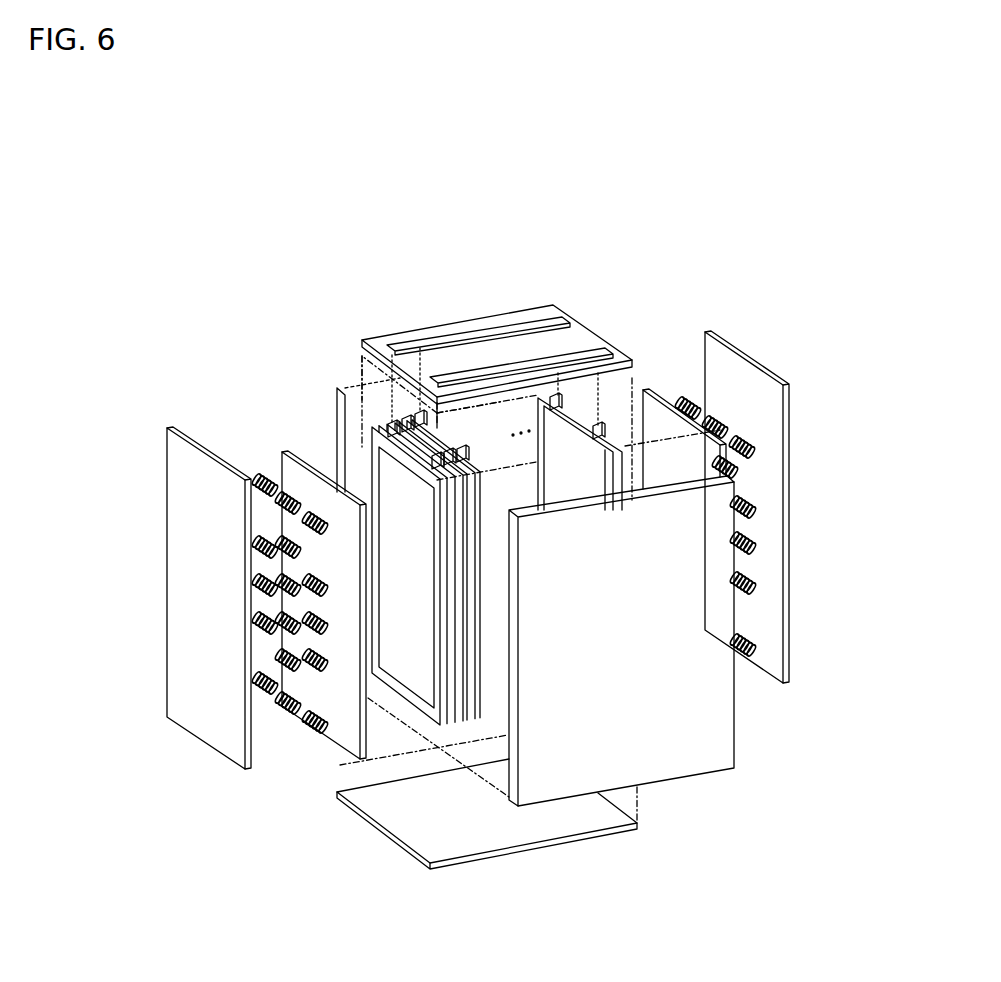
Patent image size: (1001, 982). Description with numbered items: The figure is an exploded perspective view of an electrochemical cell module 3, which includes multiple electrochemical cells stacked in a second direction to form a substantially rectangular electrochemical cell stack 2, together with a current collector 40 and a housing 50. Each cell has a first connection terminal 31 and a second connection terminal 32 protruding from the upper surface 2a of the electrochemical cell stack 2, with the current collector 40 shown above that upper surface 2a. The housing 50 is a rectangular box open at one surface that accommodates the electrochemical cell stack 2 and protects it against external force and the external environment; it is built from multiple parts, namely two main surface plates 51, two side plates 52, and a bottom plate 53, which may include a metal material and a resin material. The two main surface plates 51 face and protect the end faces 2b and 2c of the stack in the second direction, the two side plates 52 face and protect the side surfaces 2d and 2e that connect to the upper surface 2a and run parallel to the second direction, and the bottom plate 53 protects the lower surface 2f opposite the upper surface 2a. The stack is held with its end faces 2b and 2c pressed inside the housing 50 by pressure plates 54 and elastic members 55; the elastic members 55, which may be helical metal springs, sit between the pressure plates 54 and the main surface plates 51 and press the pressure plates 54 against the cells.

The electrochemical cell module 3 is at (563, 244).
The electrochemical cell stack 2 is at (356, 470).
The upper surface 2a is at (486, 416).
The end face 2b is at (405, 690).
The end face 2c is at (625, 452).
The side surface 2d is at (500, 670).
The side surface 2e is at (374, 396).
The lower surface 2f is at (447, 722).
The first connection terminal 31 is at (428, 408).
The second connection terminal 32 is at (600, 428).
The current collector 40 is at (563, 338).
The housing 50 is at (163, 925).
The main surface plate 51 is at (750, 388).
The side plate 52 is at (339, 388).
The bottom plate 53 is at (455, 838).
The pressure plate 54 is at (652, 405).
The elastic member 55 is at (688, 400).